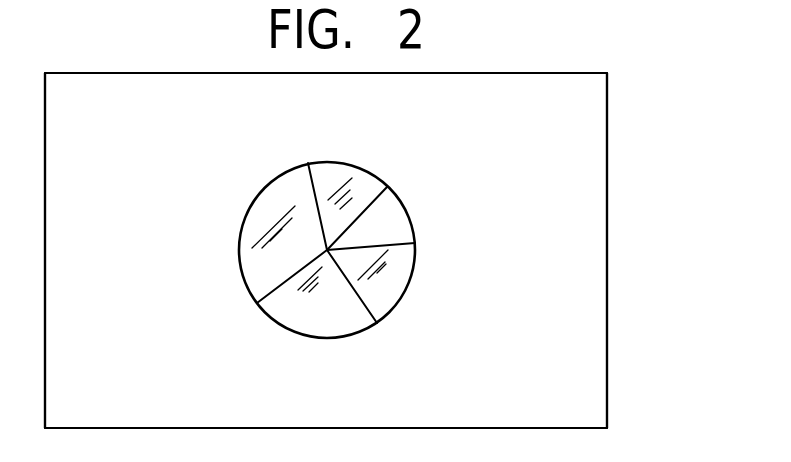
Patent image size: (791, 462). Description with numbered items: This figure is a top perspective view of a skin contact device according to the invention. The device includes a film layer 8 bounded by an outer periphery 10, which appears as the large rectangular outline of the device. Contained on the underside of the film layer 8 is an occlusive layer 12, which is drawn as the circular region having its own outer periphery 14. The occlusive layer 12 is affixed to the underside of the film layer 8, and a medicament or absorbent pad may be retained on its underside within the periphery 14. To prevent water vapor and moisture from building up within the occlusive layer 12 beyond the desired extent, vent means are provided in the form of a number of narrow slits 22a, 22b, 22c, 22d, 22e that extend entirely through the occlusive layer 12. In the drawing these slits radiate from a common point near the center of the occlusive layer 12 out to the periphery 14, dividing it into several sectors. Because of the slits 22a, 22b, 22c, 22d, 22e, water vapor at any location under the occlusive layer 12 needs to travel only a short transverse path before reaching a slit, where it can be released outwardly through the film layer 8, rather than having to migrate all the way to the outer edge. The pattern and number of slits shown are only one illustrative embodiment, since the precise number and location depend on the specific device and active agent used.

The film layer 8 is at (562, 220).
The outer periphery 10 is at (608, 137).
The occlusive layer 12 is at (382, 222).
The outer periphery 14 is at (345, 163).
The narrow slit 22a is at (280, 287).
The narrow slit 22b is at (358, 303).
The narrow slit 22c is at (393, 243).
The narrow slit 22d is at (360, 217).
The narrow slit 22e is at (313, 193).